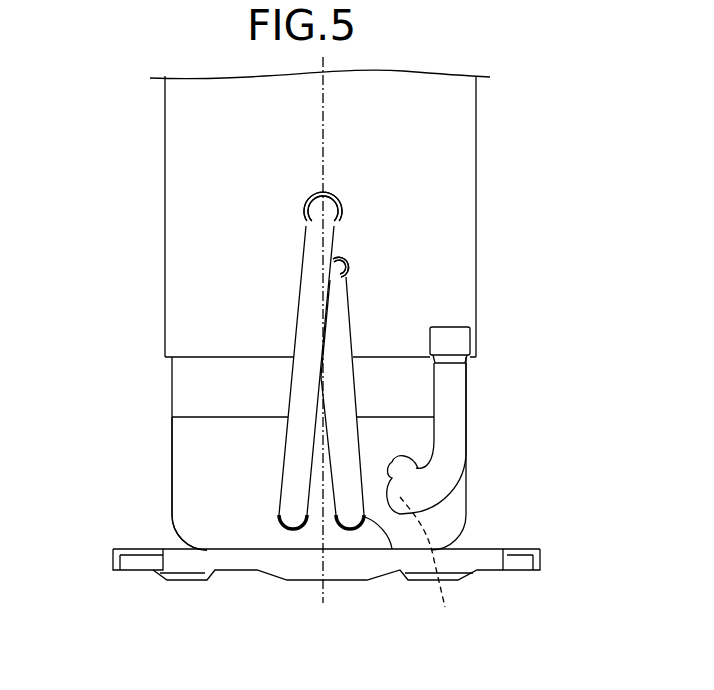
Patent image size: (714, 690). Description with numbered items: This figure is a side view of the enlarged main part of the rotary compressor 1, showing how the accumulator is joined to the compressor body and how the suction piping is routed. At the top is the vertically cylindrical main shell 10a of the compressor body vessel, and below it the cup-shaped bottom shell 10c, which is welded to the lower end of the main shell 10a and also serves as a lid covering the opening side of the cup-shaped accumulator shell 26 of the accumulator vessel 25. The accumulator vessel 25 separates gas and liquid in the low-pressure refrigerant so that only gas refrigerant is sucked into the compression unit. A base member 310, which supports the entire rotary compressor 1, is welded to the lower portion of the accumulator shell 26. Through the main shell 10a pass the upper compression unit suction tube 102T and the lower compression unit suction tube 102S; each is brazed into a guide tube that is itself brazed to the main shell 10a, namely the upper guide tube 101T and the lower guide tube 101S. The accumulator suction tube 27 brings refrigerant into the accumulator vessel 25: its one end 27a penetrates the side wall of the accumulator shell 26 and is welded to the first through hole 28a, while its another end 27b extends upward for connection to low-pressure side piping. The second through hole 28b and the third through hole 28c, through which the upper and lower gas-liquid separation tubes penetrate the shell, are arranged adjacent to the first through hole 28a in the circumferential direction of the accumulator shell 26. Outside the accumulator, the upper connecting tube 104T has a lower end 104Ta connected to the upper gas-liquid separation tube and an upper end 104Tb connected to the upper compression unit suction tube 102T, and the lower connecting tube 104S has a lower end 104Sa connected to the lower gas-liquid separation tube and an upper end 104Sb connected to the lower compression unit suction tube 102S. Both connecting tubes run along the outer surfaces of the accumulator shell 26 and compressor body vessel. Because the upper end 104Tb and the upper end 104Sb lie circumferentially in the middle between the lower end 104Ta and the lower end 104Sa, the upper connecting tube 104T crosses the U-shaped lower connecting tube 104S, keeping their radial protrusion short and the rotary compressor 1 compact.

The rotary compressor 1 is at (523, 84).
The main shell 10a is at (178, 130).
The bottom shell 10c is at (187, 389).
The accumulator vessel 25 is at (152, 479).
The accumulator shell 26 is at (187, 447).
The accumulator suction tube 27 is at (455, 427).
The one end of the accumulator suction tube 27a is at (433, 566).
The another end of the accumulator suction tube 27b is at (455, 340).
The first through hole 28a is at (390, 472).
The second through hole 28b is at (280, 518).
The third through hole 28c is at (392, 549).
The base member 310 is at (225, 560).
The upper guide tube 101T is at (333, 195).
The upper compression unit suction tube 102T is at (343, 208).
The lower guide tube 101S is at (339, 258).
The lower compression unit suction tube 102S is at (338, 267).
The upper connecting tube 104T is at (307, 282).
The lower end of the upper connecting tube 104Ta is at (293, 522).
The upper end of the upper connecting tube 104Tb is at (317, 213).
The lower connecting tube 104S is at (338, 388).
The lower end of the lower connecting tube 104Sa is at (352, 524).
The upper end of the lower connecting tube 104Sb is at (340, 280).